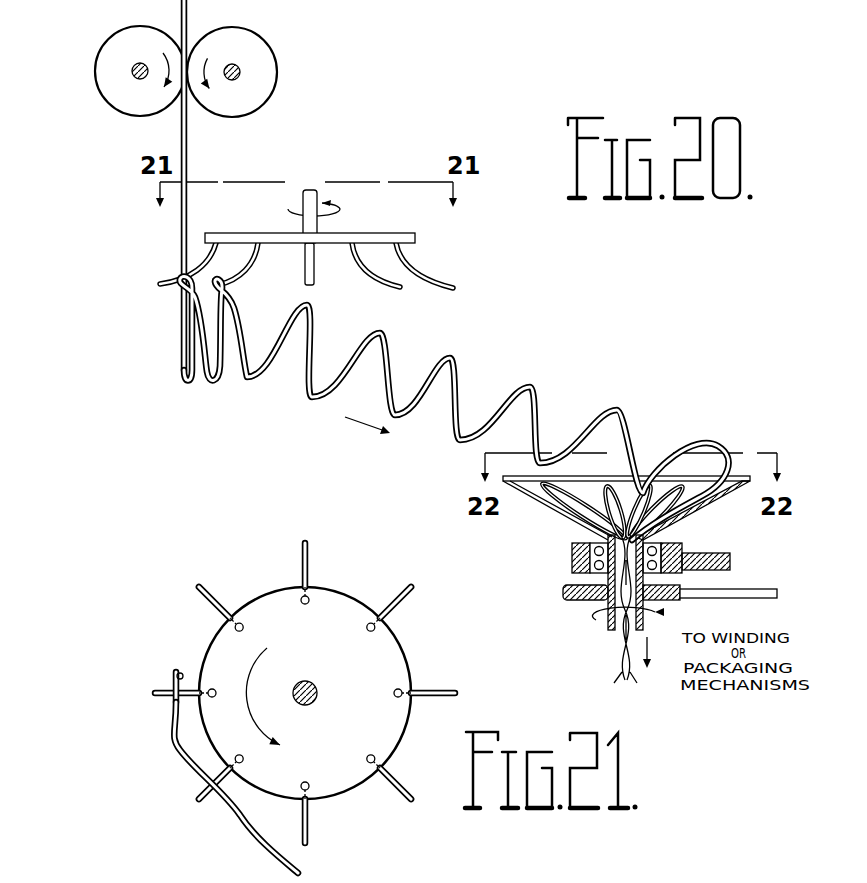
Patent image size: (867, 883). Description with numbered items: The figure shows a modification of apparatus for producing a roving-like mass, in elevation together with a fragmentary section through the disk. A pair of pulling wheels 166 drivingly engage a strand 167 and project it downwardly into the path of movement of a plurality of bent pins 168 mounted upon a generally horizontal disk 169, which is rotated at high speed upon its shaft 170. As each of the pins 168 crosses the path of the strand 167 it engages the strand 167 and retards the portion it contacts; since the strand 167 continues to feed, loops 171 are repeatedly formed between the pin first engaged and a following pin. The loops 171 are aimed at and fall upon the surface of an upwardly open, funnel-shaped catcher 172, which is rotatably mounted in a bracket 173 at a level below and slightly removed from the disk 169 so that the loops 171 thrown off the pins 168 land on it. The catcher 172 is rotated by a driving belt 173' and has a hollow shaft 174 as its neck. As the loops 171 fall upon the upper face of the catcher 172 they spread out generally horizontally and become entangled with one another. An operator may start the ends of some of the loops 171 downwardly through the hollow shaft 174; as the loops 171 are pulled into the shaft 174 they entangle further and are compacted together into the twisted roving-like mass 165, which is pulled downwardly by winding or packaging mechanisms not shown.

In FIG. 20, the twisted roving-like mass 165 is at (618, 658).
In FIG. 20, the pulling wheels 166 is at (111, 43).
In FIG. 20, the strand 167 is at (190, 21).
In FIG. 21, the strand 167 is at (188, 651).
In FIG. 20, the bent pins 168 is at (170, 269).
In FIG. 21, the bent pins 168 is at (160, 691).
In FIG. 20, the disk 169 is at (397, 234).
In FIG. 21, the disk 169 is at (386, 647).
In FIG. 20, the shaft 170 is at (313, 191).
In FIG. 21, the shaft 170 is at (317, 691).
In FIG. 20, the loops 171 is at (238, 381).
In FIG. 21, the loops 171 is at (254, 840).
In FIG. 20, the funnel-shaped catcher 172 is at (567, 515).
In FIG. 20, the bracket 173 is at (657, 546).
In FIG. 20, the driving belt 173' is at (728, 582).
In FIG. 20, the hollow shaft 174 is at (563, 578).